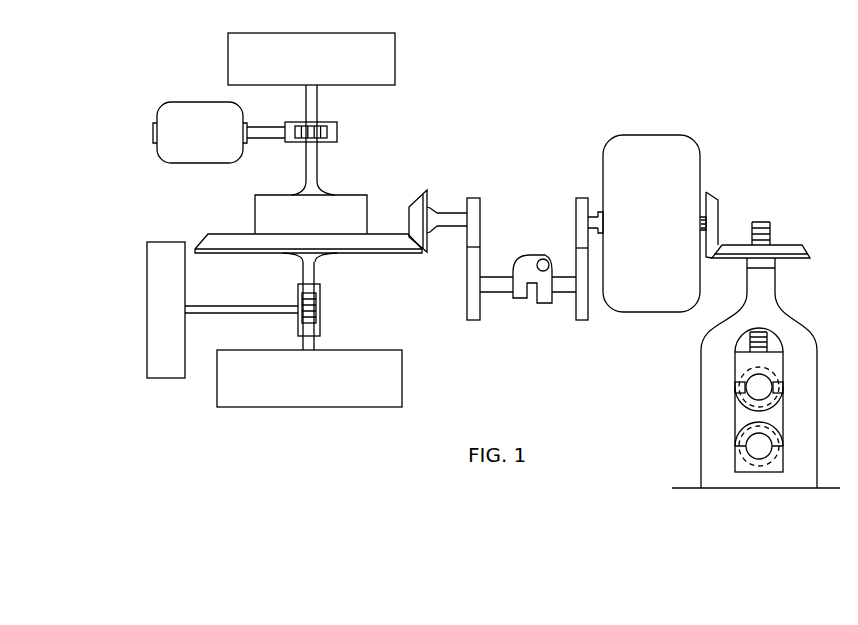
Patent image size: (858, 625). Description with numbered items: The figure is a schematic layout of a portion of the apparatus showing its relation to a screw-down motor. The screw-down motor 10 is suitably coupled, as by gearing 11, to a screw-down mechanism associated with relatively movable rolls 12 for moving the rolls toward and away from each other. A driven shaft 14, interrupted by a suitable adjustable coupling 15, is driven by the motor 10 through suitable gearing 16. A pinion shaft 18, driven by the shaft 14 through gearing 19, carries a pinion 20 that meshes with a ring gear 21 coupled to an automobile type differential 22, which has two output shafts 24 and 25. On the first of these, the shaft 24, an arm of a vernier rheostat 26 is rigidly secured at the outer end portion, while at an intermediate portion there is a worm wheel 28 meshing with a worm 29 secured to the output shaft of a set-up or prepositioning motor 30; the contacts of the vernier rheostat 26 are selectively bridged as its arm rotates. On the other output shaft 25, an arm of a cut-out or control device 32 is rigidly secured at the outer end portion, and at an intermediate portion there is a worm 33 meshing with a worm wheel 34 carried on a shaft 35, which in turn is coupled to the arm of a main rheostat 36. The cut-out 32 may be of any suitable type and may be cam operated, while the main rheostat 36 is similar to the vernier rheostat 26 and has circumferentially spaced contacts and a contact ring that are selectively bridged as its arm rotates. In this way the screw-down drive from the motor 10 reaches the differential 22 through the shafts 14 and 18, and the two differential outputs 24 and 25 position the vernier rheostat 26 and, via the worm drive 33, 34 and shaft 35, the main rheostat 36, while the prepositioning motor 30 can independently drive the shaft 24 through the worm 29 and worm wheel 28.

The screw-down motor 10 is at (692, 160).
The gearing 11 is at (731, 246).
The relatively movable rolls 12 is at (781, 388).
The driven shaft 14 is at (497, 284).
The adjustable coupling 15 is at (530, 257).
The gearing 16 is at (580, 255).
The pinion shaft 18 is at (448, 216).
The gearing 19 is at (478, 232).
The pinion 20 is at (417, 205).
The ring gear 21 is at (386, 241).
The automobile type differential 22 is at (353, 200).
The output shaft 24 is at (317, 158).
The output shaft 25 is at (316, 277).
The vernier rheostat 26 is at (395, 64).
The worm wheel 28 is at (338, 132).
The worm 29 is at (318, 126).
The set-up or prepositioning motor 30 is at (188, 108).
The cut-out or control device 32 is at (394, 381).
The worm 33 is at (318, 312).
The worm wheel 34 is at (322, 334).
The shaft 35 is at (245, 308).
The main rheostat 36 is at (159, 244).